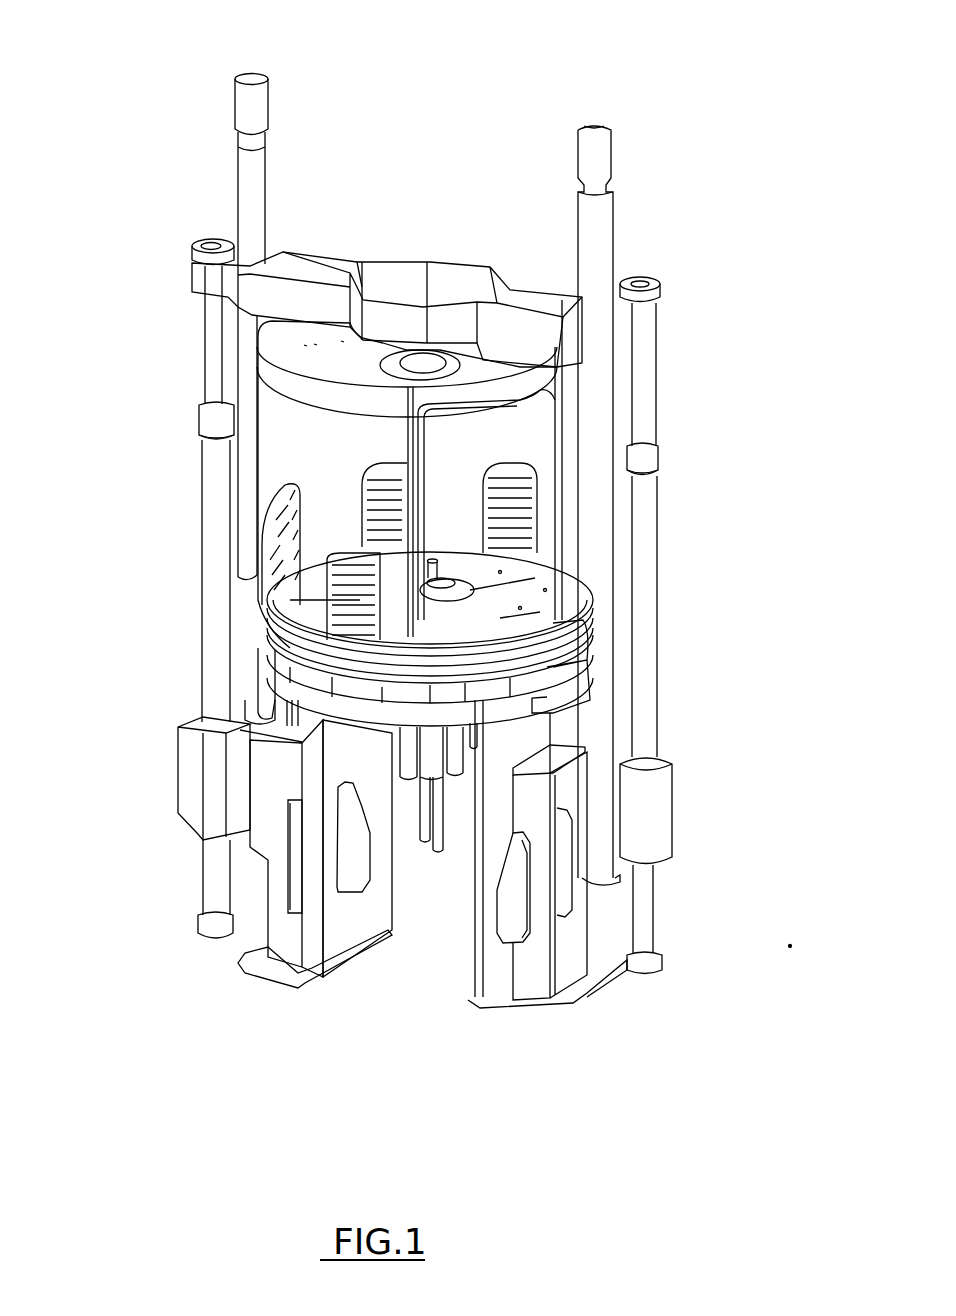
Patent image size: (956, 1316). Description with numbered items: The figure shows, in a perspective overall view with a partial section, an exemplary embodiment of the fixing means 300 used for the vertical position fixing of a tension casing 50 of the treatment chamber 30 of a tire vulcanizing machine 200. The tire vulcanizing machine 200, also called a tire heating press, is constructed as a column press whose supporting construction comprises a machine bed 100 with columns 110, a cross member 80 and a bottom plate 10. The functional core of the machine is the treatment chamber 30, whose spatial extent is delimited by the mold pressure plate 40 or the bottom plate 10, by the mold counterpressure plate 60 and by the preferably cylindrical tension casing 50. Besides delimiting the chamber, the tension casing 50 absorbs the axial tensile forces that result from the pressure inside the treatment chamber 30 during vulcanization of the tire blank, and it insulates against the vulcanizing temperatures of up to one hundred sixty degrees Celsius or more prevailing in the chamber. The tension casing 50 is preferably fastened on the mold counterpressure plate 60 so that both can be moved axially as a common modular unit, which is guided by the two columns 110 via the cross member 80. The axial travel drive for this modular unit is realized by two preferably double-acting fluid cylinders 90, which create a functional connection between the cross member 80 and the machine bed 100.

The tire vulcanizing machine 200 is at (477, 192).
The cross member 80 is at (295, 300).
The mold counterpressure plate 60 is at (308, 386).
The treatment chamber 30 is at (480, 458).
The tension casing 50 is at (300, 528).
The mold pressure plate 40 is at (300, 632).
The bottom plate 10 is at (295, 666).
The fixing means 300 is at (362, 594).
The fluid cylinders 90 is at (212, 678).
The columns 110 is at (197, 738).
The machine bed 100 is at (270, 703).